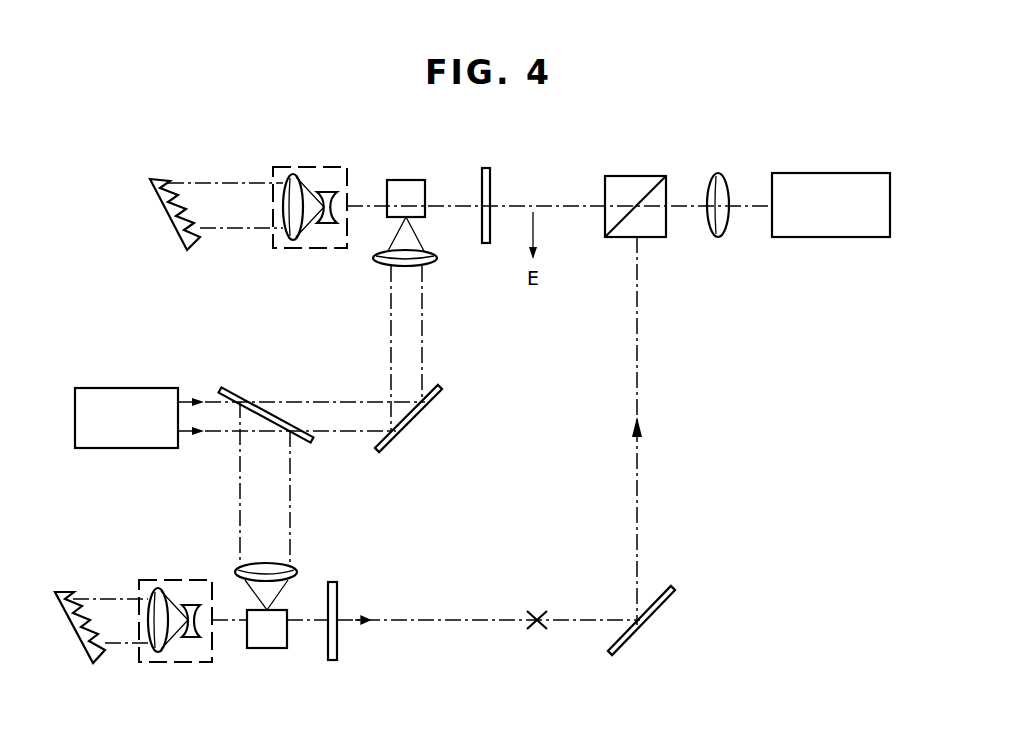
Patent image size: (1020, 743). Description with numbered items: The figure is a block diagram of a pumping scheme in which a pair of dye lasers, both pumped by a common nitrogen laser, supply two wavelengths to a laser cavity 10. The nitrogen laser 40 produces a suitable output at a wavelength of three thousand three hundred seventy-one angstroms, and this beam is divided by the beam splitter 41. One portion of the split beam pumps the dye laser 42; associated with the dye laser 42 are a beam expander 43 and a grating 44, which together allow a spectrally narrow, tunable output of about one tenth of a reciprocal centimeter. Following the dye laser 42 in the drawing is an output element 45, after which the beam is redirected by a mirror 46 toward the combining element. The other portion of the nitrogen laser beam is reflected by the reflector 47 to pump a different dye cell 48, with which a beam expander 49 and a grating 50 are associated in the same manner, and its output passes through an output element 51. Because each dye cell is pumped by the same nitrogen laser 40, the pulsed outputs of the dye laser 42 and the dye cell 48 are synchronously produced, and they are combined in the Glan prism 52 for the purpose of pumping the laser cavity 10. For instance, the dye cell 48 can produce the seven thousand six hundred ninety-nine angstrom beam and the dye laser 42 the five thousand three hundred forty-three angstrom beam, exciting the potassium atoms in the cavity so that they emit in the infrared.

The laser cavity 10 is at (790, 173).
The nitrogen laser 40 is at (108, 388).
The beam splitter 41 is at (238, 392).
The dye laser 42 is at (268, 648).
The beam expander 43 is at (175, 662).
The grating 44 is at (78, 650).
The output mirror / plate 45 is at (333, 660).
The mirror 46 is at (646, 622).
The reflector 47 is at (414, 421).
The dye cell 48 is at (405, 180).
The beam expander 49 is at (305, 167).
The grating 50 is at (160, 210).
The output mirror / plate 51 is at (485, 168).
The Glan prism 52 is at (632, 176).